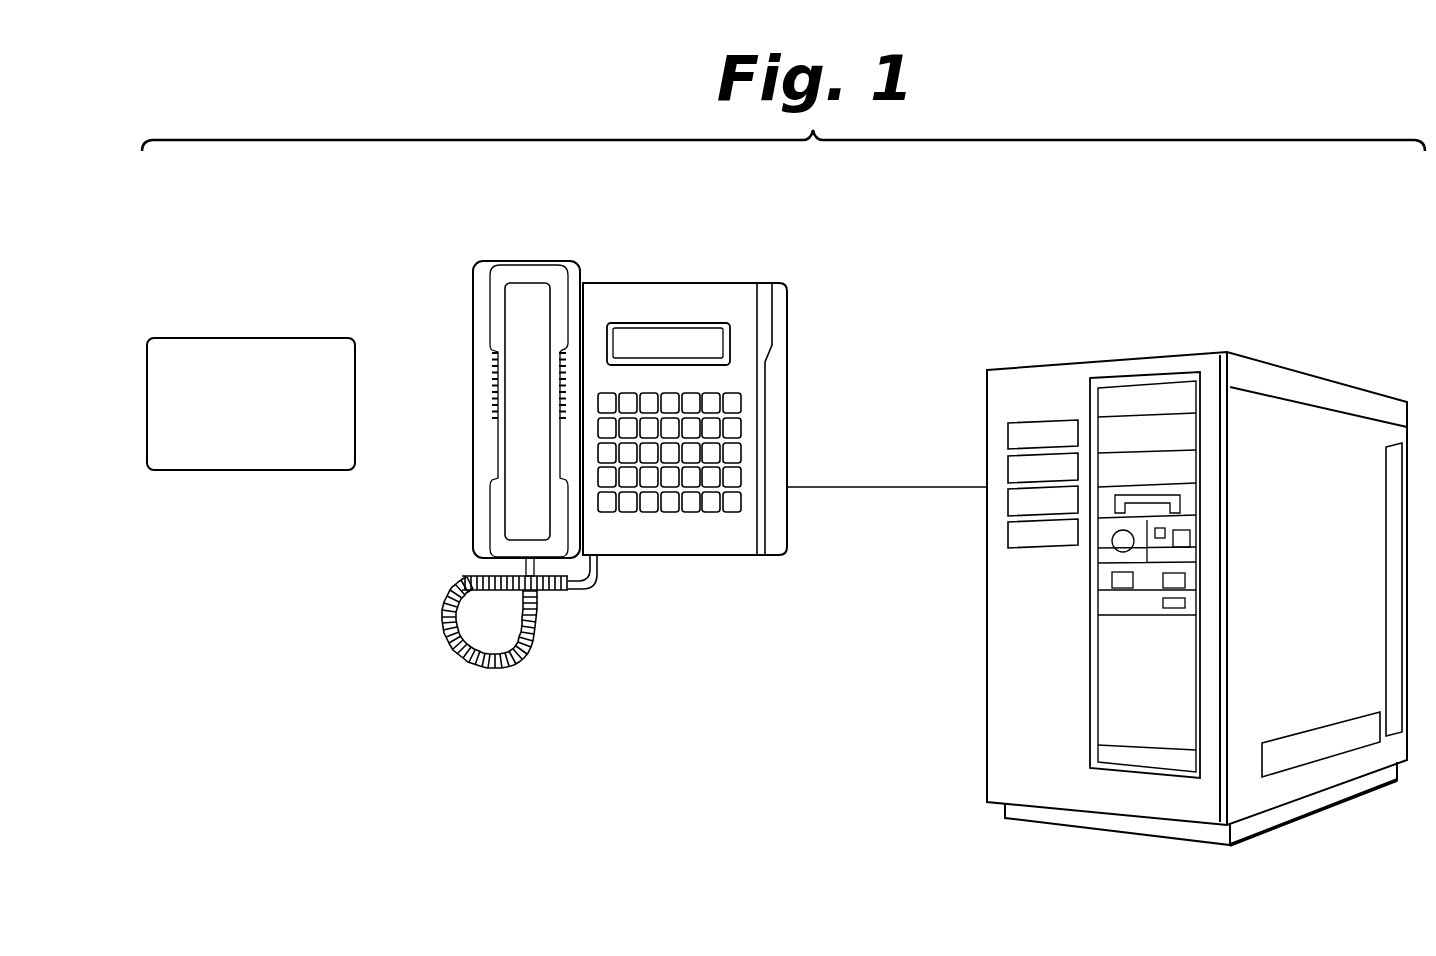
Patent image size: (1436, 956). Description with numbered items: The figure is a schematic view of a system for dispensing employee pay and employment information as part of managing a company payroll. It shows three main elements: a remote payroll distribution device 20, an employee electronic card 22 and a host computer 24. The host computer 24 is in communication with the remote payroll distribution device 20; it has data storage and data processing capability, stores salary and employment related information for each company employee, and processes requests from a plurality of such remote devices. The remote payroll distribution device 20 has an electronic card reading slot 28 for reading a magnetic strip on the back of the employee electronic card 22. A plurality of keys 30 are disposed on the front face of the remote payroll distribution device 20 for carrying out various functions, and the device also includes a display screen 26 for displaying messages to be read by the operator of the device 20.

The remote payroll distribution device 20 is at (664, 439).
The employee electronic card 22 is at (234, 470).
The host computer 24 is at (1250, 357).
The display screen 26 is at (667, 327).
The electronic card reading slot 28 is at (773, 342).
The keys 30 is at (670, 513).